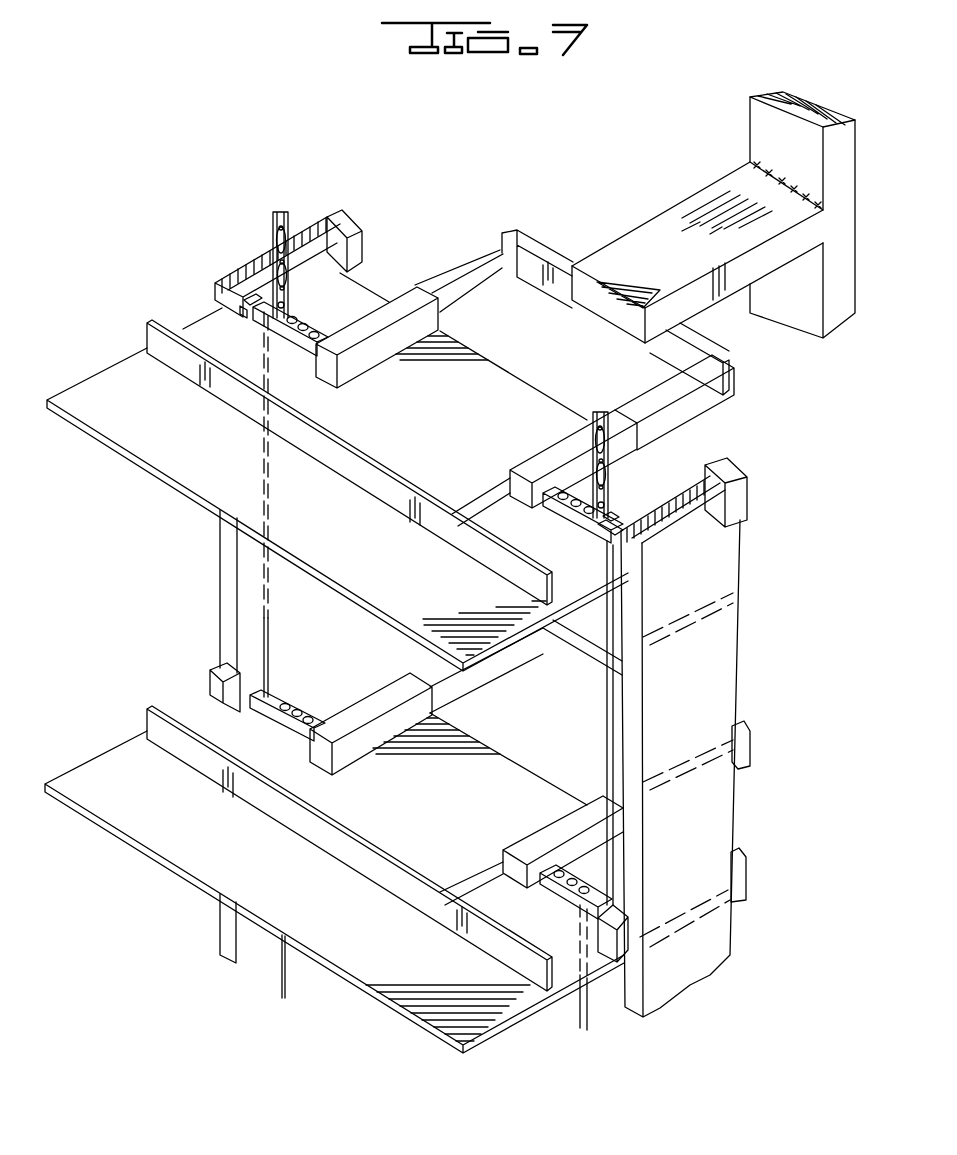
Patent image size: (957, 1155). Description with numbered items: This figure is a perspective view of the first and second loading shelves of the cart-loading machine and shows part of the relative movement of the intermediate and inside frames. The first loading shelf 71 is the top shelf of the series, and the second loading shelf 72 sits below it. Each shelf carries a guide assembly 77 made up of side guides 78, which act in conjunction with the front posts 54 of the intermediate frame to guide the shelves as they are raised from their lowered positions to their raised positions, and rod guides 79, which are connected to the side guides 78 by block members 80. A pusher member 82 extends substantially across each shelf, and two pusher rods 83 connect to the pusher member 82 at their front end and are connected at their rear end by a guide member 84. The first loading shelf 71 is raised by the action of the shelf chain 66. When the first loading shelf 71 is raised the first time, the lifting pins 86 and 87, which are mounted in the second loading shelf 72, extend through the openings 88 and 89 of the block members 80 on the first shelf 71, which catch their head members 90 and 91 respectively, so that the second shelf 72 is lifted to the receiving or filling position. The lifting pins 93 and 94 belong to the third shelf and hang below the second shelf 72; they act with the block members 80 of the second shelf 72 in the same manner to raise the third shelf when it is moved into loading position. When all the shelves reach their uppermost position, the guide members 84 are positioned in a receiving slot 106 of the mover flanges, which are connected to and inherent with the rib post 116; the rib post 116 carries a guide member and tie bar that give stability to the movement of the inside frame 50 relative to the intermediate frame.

The inside frame 50 is at (639, 200).
The front posts 54 is at (258, 258).
The shelf chain 66 is at (288, 226).
The first loading shelf 71 is at (90, 386).
The second loading shelf 72 is at (106, 762).
The guide assemblies 77 is at (313, 320).
The side guides 78 is at (355, 250).
The rod guides 79 is at (382, 348).
The block members 80 is at (262, 326).
The pusher members 82 is at (382, 485).
The pusher rods 83 is at (453, 282).
The guide members 84 is at (687, 357).
The lifting pin 86 is at (268, 617).
The lifting pin 87 is at (605, 725).
The opening 88 is at (250, 303).
The opening 89 is at (610, 517).
The head member 90 is at (240, 310).
The head member 91 is at (600, 524).
The lifting pin 93 is at (280, 967).
The lifting pin 94 is at (580, 1010).
The receiving slot 106 is at (651, 327).
The rib post 116 is at (808, 328).